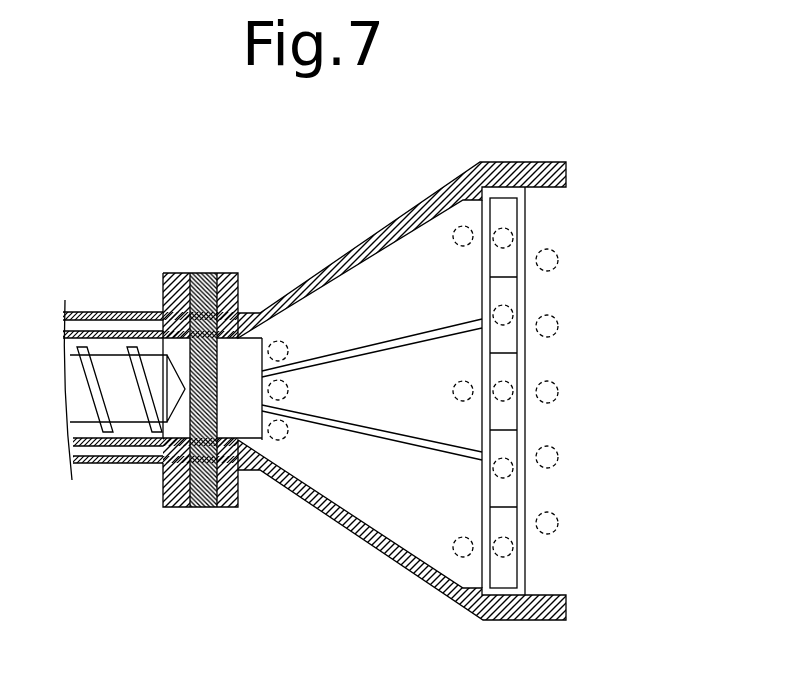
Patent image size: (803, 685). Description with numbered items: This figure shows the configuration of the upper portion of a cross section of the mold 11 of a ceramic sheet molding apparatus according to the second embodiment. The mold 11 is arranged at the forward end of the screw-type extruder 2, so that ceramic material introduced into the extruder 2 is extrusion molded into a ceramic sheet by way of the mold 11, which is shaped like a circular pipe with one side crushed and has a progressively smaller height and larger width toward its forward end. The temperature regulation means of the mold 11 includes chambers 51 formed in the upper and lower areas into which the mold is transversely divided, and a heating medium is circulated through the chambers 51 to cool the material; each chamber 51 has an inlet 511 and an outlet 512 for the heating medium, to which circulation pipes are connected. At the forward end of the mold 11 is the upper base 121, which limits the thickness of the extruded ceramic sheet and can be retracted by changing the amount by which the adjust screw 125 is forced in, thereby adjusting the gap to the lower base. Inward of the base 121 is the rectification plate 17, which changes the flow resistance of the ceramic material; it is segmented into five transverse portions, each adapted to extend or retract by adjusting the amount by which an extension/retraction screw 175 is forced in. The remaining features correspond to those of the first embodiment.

The screw-type extruder 2 is at (99, 306).
The mold 11 is at (349, 243).
The chamber 51 is at (406, 278).
The inlet 511 is at (462, 222).
The outlet 512 is at (286, 341).
The rectification plate 17 is at (507, 208).
The upper base 121 is at (553, 203).
The extension/retraction screw 175 is at (512, 238).
The adjust screw 125 is at (553, 266).